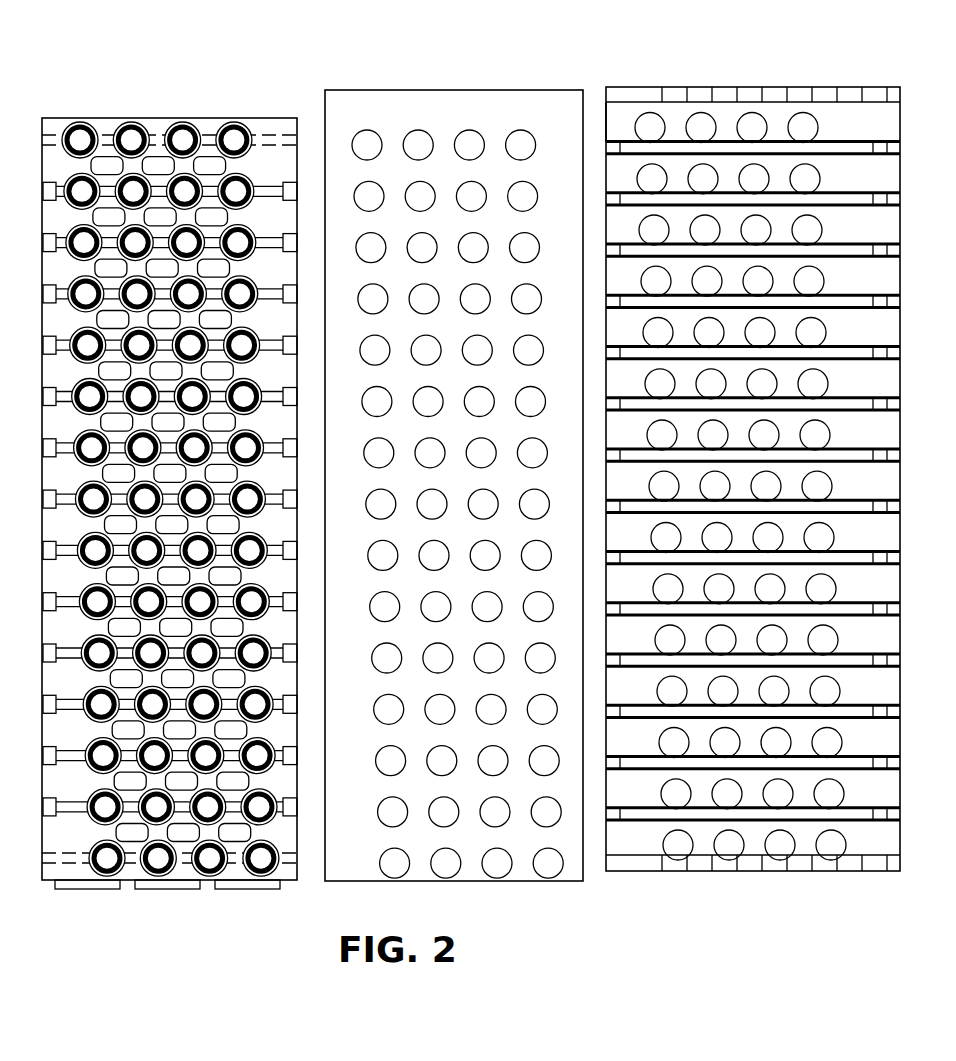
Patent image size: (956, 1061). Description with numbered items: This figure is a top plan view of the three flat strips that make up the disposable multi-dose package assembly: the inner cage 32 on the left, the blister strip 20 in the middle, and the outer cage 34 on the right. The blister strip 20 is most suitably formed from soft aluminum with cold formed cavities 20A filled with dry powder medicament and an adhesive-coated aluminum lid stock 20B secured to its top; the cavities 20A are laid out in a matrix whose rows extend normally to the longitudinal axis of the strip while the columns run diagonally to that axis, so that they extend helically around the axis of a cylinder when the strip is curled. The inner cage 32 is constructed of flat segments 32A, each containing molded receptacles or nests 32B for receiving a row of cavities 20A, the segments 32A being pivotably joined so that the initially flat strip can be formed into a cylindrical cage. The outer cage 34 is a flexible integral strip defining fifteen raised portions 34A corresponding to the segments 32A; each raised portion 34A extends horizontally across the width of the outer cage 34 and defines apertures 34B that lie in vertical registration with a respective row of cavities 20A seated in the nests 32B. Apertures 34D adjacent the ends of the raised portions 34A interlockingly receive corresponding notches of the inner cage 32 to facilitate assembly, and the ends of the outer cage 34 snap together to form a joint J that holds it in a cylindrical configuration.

The inner cage 32 is at (117, 80).
The flat segments 32A is at (296, 179).
The nests 32B is at (222, 128).
The blister strip 20 is at (433, 70).
The cavities 20A is at (535, 248).
The lid stock 20B is at (472, 123).
The joint J is at (609, 132).
The outer cage 34 is at (742, 75).
The raised portions 34A is at (890, 139).
The apertures 34B is at (700, 115).
The apertures 34D is at (880, 249).